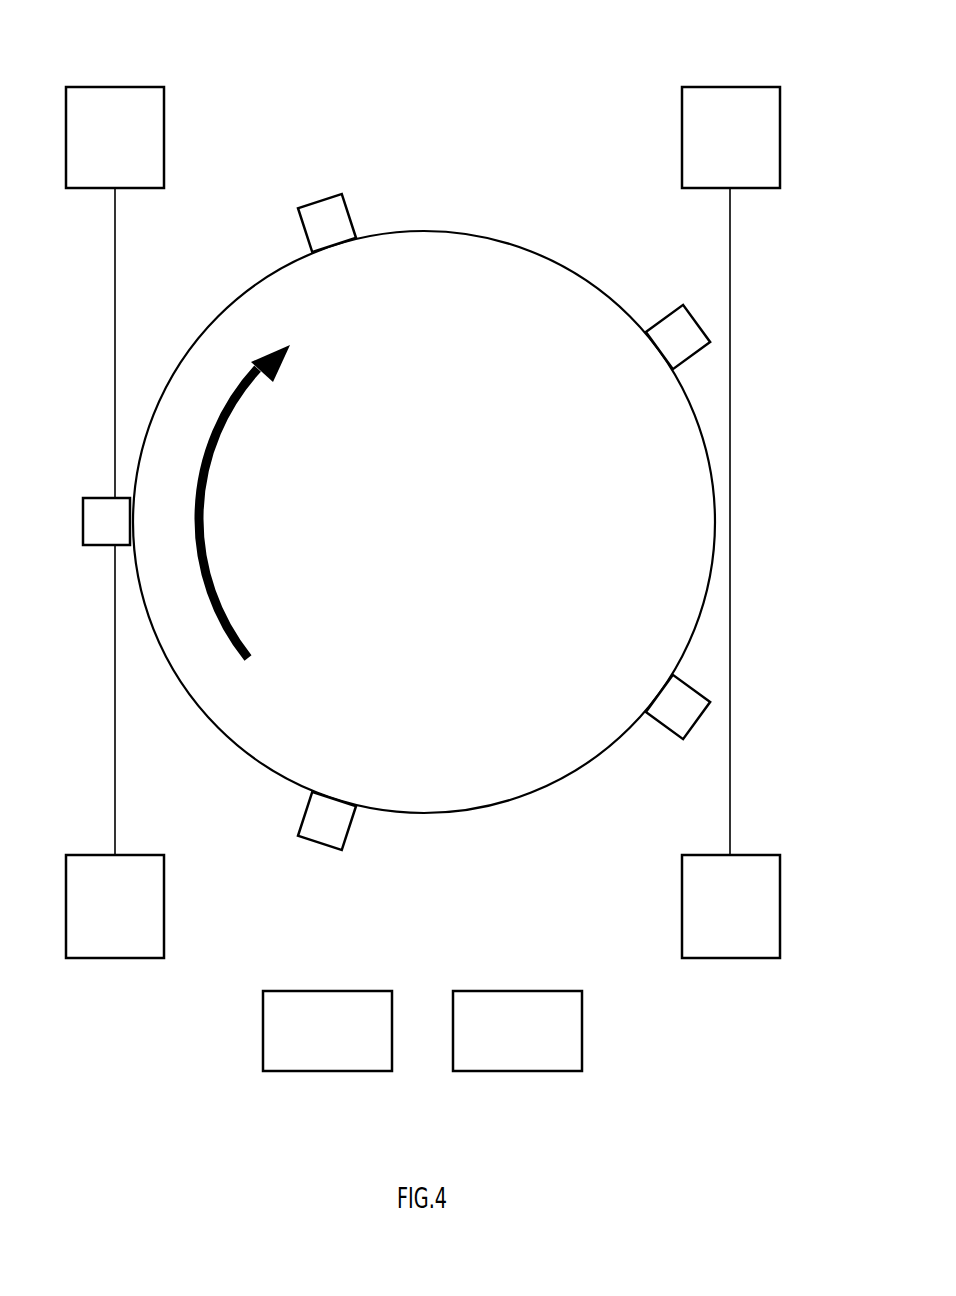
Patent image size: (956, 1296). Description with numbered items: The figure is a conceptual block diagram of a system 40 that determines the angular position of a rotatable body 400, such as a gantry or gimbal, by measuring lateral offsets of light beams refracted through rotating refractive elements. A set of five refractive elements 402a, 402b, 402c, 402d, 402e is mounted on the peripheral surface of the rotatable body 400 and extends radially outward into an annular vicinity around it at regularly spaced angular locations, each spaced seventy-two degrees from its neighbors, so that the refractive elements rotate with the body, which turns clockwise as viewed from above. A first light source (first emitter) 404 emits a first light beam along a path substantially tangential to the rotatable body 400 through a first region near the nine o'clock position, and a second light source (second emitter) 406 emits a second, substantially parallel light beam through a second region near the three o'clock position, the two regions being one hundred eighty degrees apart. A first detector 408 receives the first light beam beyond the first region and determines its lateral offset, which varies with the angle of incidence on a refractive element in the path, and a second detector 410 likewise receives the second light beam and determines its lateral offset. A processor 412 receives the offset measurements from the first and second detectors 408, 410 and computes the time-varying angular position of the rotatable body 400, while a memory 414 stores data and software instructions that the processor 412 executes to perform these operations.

The system 40 is at (565, 72).
The rotatable body 400 is at (435, 534).
The refractive element 402a is at (83, 521).
The refractive element 402b is at (312, 204).
The refractive element 402c is at (661, 318).
The refractive element 402d is at (695, 727).
The refractive element 402e is at (318, 845).
The first light source (first emitter) 404 is at (164, 918).
The second light source (second emitter) 406 is at (780, 928).
The first detector 408 is at (164, 138).
The second detector 410 is at (780, 138).
The processor 412 is at (302, 1071).
The memory 414 is at (523, 1071).